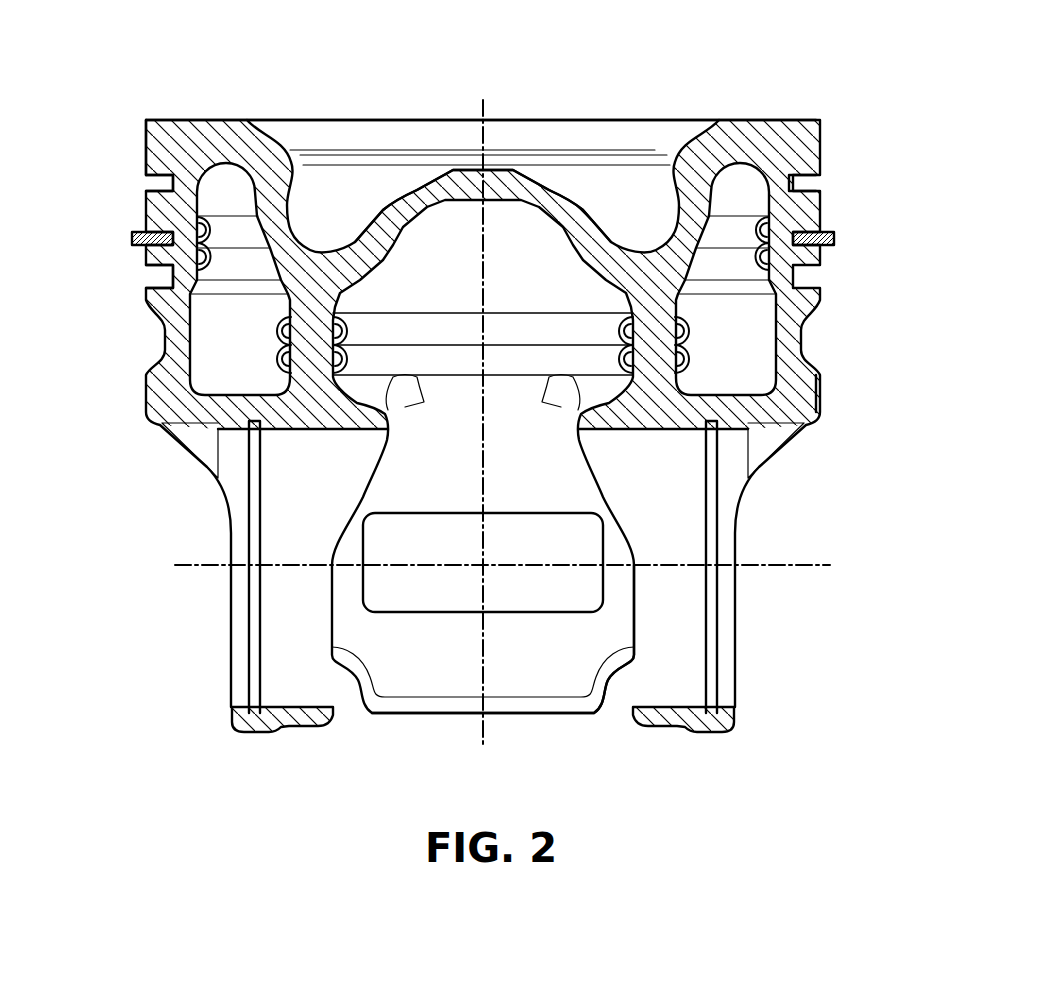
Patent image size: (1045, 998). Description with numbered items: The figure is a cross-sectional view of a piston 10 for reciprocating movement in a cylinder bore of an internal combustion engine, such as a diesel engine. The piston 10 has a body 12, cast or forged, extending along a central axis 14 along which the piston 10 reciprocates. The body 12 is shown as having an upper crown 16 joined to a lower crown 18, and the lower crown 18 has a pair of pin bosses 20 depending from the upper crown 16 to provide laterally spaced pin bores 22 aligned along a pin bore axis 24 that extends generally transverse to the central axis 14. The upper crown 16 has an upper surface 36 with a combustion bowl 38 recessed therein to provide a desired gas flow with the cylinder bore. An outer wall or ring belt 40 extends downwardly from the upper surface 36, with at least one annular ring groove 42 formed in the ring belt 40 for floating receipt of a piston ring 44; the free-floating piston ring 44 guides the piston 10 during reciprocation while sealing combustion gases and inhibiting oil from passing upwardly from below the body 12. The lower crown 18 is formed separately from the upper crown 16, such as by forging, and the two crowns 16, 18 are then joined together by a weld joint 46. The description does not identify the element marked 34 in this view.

The piston 10 is at (880, 133).
The body 12 is at (818, 138).
The central axis 14 is at (483, 660).
The upper crown 16 is at (817, 210).
The lower crown 18 is at (818, 390).
The pin bosses 20 is at (670, 727).
The pin bores 22 is at (668, 703).
The pin bore axis 24 is at (770, 567).
The skirt 34 is at (528, 488).
The upper surface 36 is at (190, 120).
The combustion bowl 38 is at (407, 197).
The ring belt 40 is at (80, 157).
The annular ring groove 42 is at (158, 230).
The piston ring 44 is at (833, 238).
The weld joint 46 is at (218, 247).